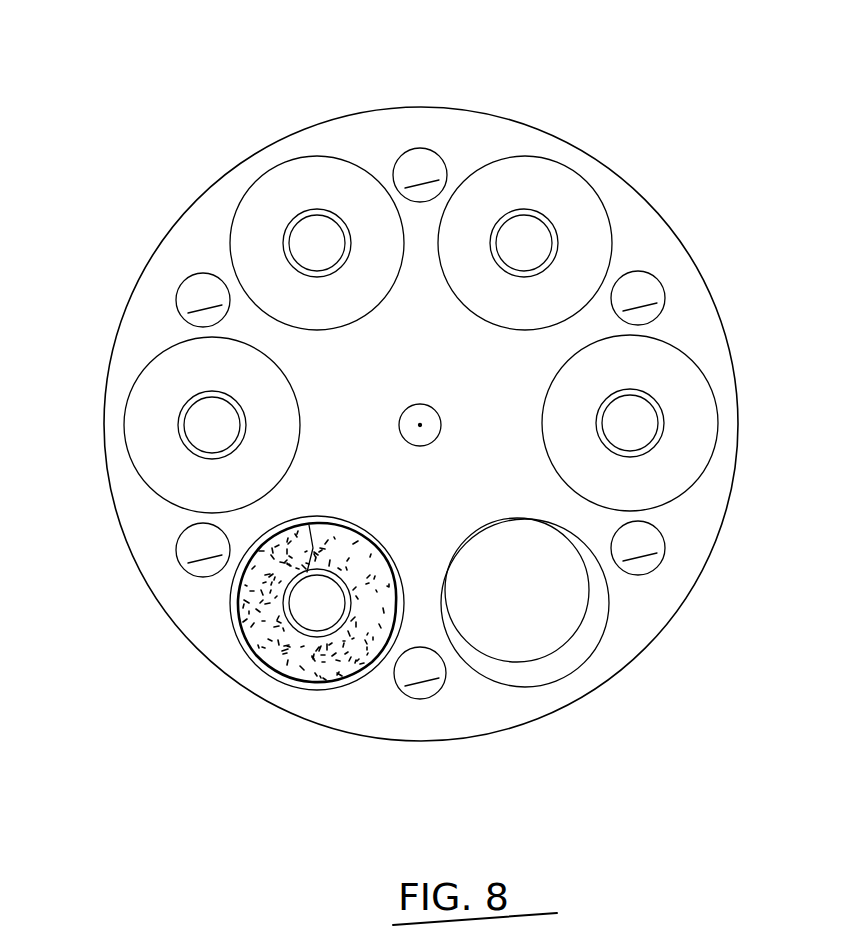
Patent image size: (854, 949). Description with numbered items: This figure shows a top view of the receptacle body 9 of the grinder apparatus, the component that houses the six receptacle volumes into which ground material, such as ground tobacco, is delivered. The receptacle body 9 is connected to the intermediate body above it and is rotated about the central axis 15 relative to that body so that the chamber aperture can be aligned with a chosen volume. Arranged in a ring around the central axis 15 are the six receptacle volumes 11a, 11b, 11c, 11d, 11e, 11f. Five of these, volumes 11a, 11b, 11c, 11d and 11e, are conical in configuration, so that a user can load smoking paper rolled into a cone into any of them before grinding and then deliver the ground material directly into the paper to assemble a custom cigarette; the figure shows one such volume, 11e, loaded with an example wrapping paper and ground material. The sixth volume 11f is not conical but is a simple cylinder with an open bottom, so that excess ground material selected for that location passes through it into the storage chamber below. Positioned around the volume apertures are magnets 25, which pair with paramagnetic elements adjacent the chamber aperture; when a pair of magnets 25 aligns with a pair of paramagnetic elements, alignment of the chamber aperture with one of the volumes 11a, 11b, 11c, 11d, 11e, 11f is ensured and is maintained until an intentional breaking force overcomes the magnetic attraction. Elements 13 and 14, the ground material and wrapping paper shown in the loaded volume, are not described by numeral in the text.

The receptacle body 9 is at (590, 133).
The receptacle volume 11a is at (682, 472).
The receptacle volume 11b is at (587, 235).
The receptacle volume 11c is at (308, 157).
The receptacle volume 11d is at (148, 488).
The receptacle volume 11e is at (273, 683).
The receptacle volume 11f is at (547, 670).
The filler material 13 is at (347, 667).
The liner ring 14 is at (247, 650).
The central axis 15 is at (420, 425).
The magnets 25 is at (420, 423).